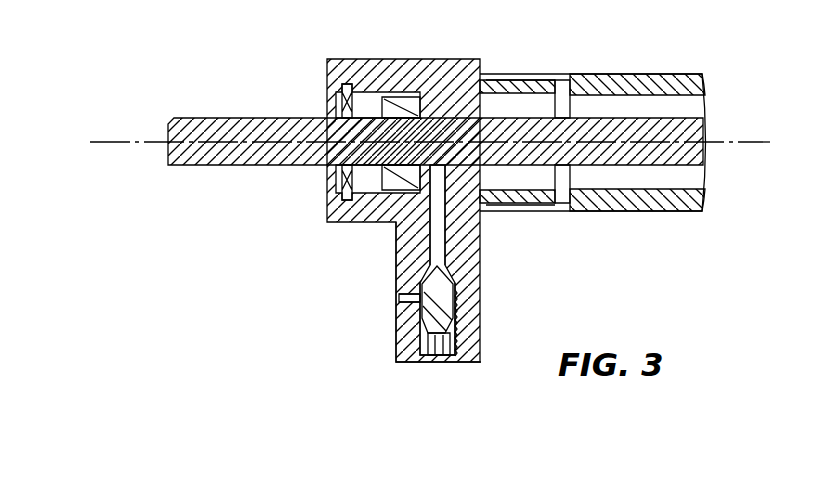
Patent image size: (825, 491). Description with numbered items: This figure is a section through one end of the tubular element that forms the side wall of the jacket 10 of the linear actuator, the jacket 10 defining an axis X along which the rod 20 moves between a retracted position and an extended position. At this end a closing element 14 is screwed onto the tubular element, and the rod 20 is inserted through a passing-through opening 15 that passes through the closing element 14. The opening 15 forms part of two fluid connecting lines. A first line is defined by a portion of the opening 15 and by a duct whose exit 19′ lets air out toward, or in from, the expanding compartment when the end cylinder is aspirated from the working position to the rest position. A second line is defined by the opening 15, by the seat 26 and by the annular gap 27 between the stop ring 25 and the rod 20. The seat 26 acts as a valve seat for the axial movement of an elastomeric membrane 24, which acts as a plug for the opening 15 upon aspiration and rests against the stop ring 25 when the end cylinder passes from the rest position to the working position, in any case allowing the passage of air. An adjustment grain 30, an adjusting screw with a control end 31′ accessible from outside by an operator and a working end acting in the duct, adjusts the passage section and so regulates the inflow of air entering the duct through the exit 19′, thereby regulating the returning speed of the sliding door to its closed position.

The jacket 10 is at (442, 206).
The axis X is at (748, 136).
The closing element 14 is at (470, 312).
The passing-through opening 15 is at (467, 115).
The exit of the duct 19′ is at (408, 300).
The rod 20 is at (268, 162).
The elastomeric membrane 24 is at (392, 212).
The stop ring 25 is at (345, 85).
The seat 26 is at (388, 100).
The annular gap 27 is at (330, 194).
The adjustment grain 30 is at (410, 346).
The control end 31′ is at (443, 350).